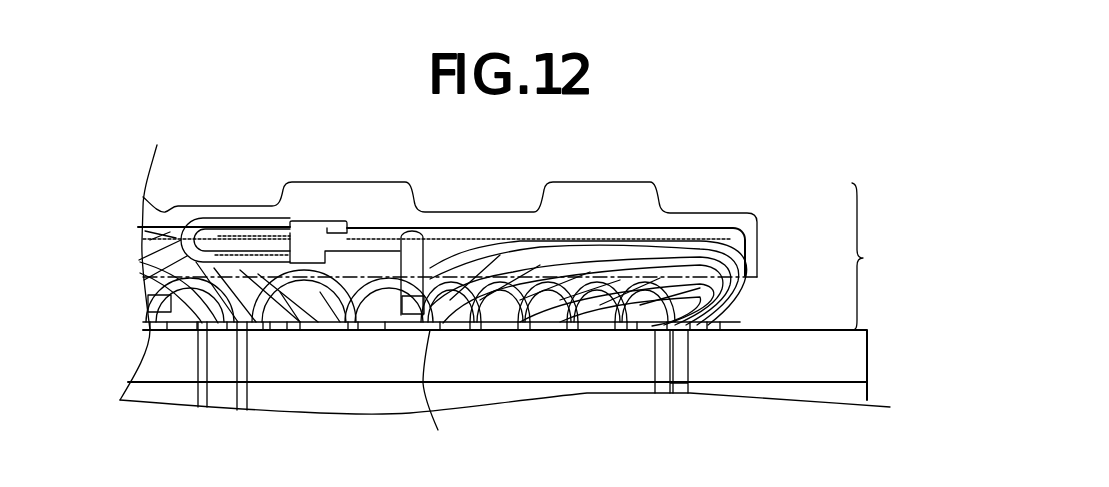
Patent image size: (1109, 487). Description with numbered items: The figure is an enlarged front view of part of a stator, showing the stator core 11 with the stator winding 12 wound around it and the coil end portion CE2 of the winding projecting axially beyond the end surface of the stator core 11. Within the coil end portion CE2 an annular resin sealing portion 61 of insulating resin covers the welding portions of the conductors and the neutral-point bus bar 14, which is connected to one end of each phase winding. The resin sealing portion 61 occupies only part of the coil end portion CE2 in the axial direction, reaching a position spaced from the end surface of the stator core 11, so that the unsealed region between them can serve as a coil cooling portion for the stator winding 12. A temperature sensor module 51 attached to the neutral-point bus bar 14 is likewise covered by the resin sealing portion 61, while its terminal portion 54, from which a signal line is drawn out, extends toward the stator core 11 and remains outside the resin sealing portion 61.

The stator core 11 is at (818, 330).
The stator winding 12 is at (741, 298).
The neutral-point bus bar 14 is at (705, 227).
The temperature sensor module 51 is at (389, 234).
The terminal portion 54 is at (430, 346).
The resin sealing portion 61 is at (207, 206).
The coil end portion CE2 is at (874, 256).